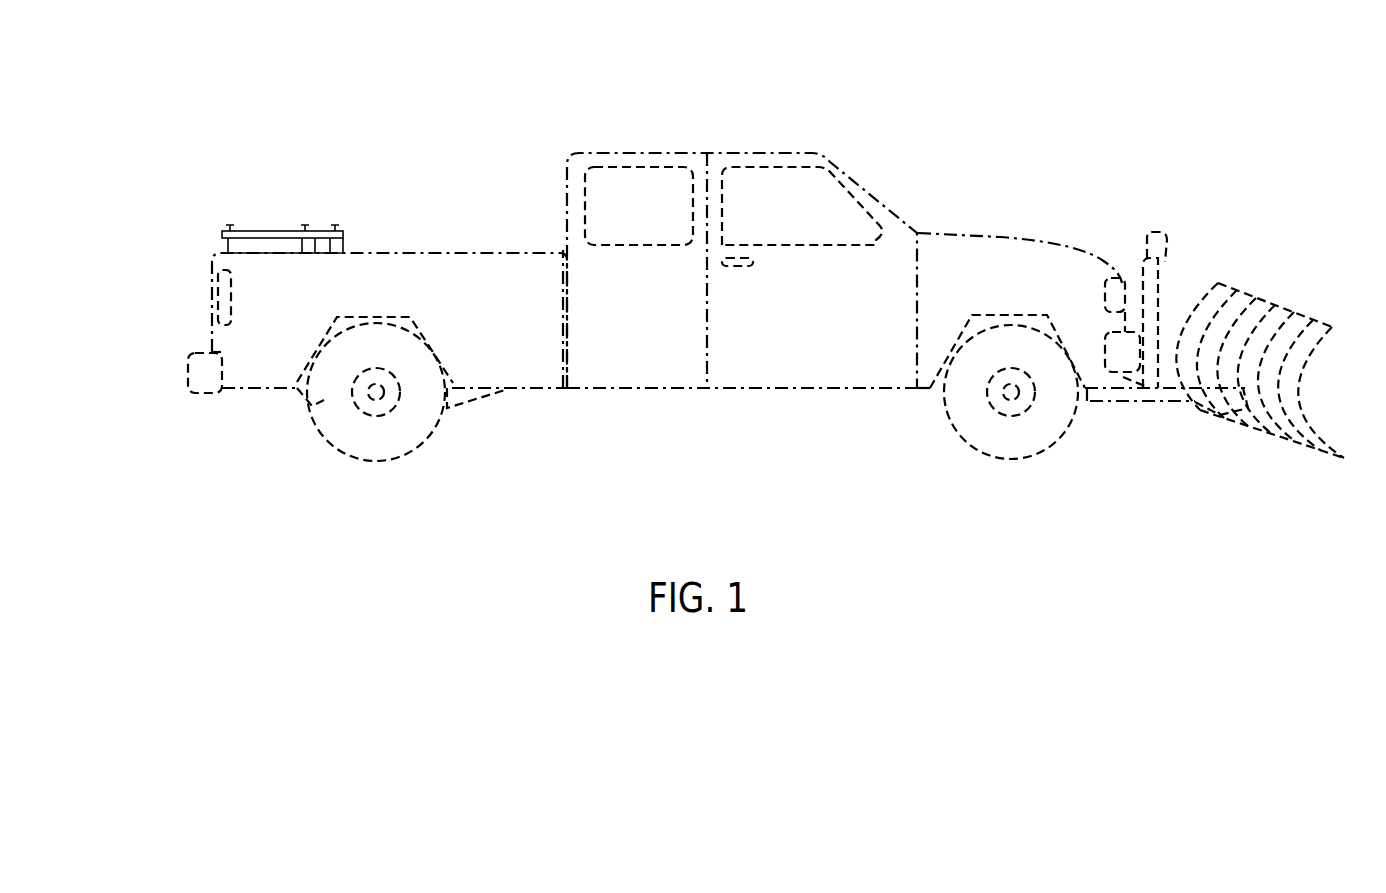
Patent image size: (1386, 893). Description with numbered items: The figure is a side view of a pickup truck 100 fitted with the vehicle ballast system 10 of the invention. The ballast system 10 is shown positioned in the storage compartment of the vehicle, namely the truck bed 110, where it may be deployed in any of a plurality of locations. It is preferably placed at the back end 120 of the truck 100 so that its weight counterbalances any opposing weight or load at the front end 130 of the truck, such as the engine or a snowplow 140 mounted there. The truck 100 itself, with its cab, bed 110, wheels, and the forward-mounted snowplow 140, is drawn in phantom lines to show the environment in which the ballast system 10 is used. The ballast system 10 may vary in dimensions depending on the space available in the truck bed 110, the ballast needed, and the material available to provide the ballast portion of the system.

The vehicle ballast system 10 is at (248, 231).
The truck 100 is at (630, 112).
The truck bed 110 is at (495, 261).
The back end 120 is at (165, 310).
The front end 130 is at (1118, 168).
The snowplow 140 is at (1252, 233).